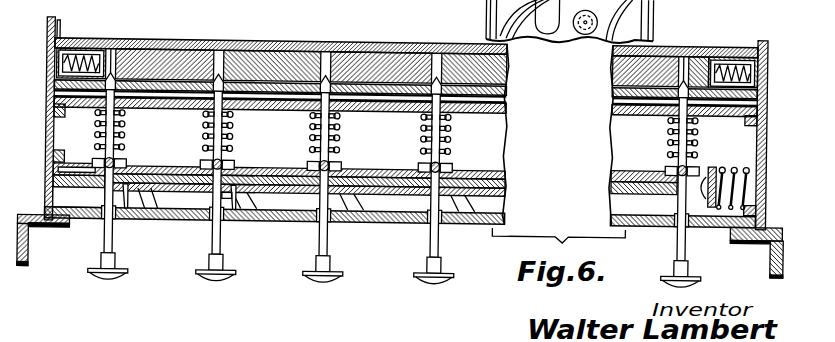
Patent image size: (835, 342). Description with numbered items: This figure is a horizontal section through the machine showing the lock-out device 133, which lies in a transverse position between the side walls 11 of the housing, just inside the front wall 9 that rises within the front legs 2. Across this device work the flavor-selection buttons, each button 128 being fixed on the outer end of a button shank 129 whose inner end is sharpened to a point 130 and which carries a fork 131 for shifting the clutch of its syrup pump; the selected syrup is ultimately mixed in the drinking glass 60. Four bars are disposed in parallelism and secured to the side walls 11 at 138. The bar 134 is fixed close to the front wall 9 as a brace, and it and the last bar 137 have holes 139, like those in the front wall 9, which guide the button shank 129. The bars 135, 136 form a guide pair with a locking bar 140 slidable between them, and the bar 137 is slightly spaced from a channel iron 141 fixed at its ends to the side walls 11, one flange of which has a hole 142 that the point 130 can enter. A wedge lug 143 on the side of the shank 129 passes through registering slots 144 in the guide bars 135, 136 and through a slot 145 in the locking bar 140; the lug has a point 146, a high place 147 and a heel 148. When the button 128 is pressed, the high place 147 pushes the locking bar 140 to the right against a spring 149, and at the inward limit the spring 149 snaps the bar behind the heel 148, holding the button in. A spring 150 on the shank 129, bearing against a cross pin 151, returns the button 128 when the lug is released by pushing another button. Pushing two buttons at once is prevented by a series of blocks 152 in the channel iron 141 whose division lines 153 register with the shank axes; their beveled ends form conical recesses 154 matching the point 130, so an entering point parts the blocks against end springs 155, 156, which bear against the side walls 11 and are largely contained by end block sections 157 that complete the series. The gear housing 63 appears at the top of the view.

The front legs 2 is at (33, 258).
The front wall 9 is at (83, 220).
The side walls 11 is at (48, 25).
The drinking glass 60 is at (620, 12).
The gear housing 63 is at (570, 22).
The button 128 is at (224, 276).
The button shank 129 is at (230, 237).
The point 130 is at (235, 106).
The fork 131 is at (328, 157).
The lock-out device 133 is at (151, 38).
The bar 134 is at (133, 220).
The guide bar 135 is at (137, 219).
The guide bar 136 is at (151, 216).
The bar 137 is at (128, 107).
The securing point 138 is at (52, 112).
The holes 139 is at (128, 114).
The locking bar 140 is at (353, 173).
The channel iron 141 is at (193, 41).
The hole 142 is at (303, 40).
The wedge lug 143 is at (236, 222).
The registering slots 144 is at (240, 219).
The slot 145 is at (203, 168).
The point 146 is at (336, 159).
The high place 147 is at (233, 220).
The heel 148 is at (233, 225).
The spring 149 is at (737, 156).
The spring 150 is at (310, 124).
The cross pin 151 is at (236, 154).
The blocks 152 is at (355, 38).
The division lines 153 is at (240, 40).
The conical recesses 154 is at (270, 40).
The end spring 155 is at (75, 42).
The end spring 156 is at (733, 40).
The end block sections 157 is at (117, 44).